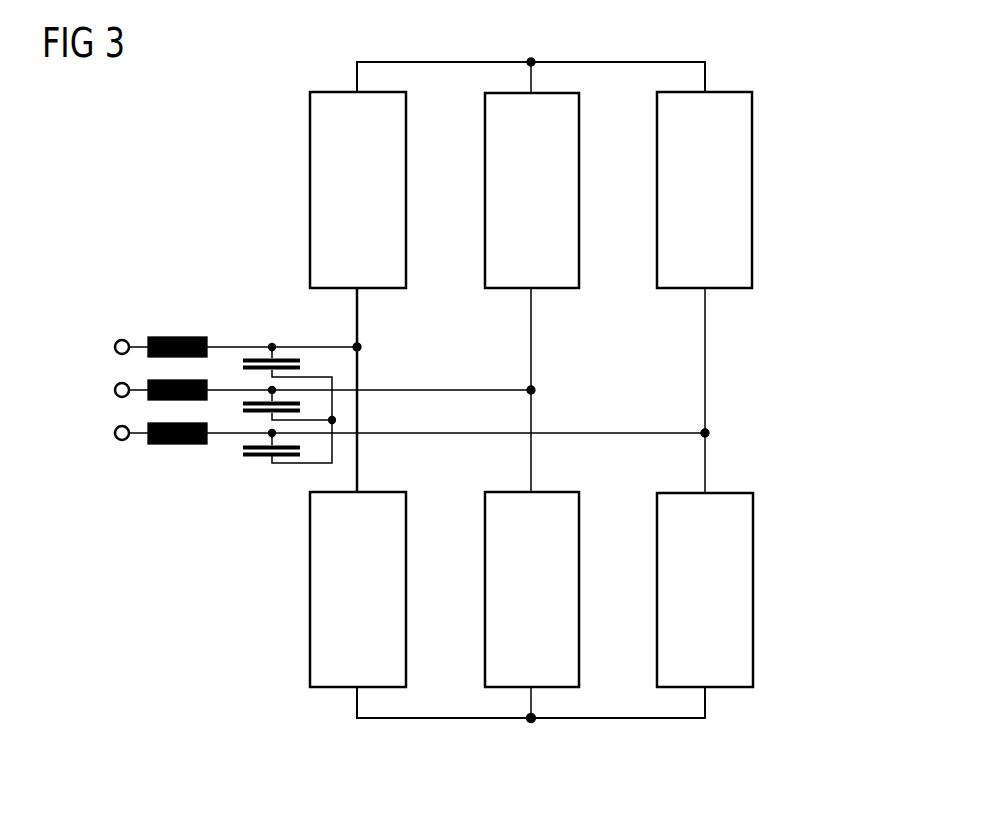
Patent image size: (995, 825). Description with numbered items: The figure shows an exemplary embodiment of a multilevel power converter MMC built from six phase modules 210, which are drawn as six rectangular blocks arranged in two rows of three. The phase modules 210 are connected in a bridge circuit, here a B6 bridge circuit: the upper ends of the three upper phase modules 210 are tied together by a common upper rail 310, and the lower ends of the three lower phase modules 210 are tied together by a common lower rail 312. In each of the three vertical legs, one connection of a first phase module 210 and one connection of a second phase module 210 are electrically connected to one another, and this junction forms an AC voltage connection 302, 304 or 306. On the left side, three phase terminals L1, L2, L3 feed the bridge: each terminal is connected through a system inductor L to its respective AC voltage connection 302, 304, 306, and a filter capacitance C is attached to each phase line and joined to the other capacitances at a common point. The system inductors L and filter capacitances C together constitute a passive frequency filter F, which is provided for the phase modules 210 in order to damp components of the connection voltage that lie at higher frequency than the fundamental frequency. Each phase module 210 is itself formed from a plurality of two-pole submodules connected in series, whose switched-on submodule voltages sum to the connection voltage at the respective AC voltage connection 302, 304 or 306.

The phase module 210 is at (406, 192).
The AC voltage connection 302 is at (357, 347).
The AC voltage connection 304 is at (531, 390).
The AC voltage connection 306 is at (705, 433).
The positive DC bus 310 is at (455, 62).
The negative DC bus 312 is at (443, 718).
The multilevel power converter MMC is at (747, 74).
The system inductor L is at (170, 392).
The filter capacitance C is at (281, 405).
The passive frequency filter F is at (205, 488).
The phase terminal L1 is at (107, 349).
The phase terminal L2 is at (107, 392).
The phase terminal L3 is at (107, 435).